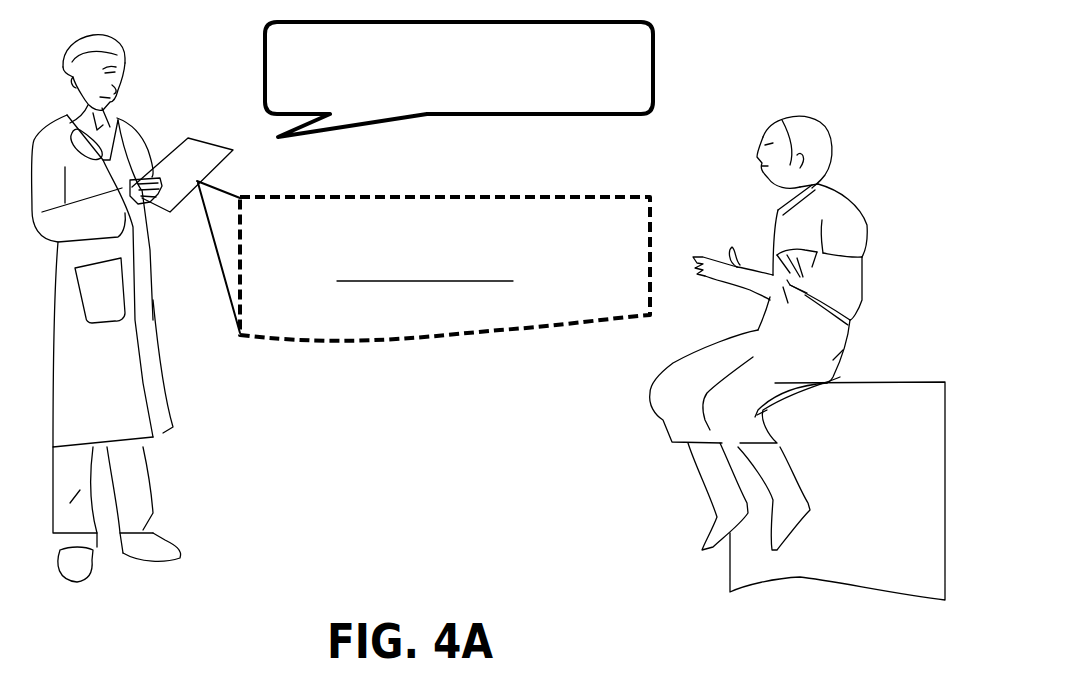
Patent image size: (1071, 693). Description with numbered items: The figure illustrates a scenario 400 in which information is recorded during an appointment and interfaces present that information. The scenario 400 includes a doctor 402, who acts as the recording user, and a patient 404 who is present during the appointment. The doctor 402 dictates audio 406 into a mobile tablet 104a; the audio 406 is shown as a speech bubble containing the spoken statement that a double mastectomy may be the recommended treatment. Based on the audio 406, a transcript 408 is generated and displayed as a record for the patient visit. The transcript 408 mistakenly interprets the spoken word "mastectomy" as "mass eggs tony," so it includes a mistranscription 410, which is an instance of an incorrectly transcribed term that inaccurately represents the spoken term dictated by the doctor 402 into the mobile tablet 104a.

The scenario 400 is at (712, 76).
The doctor 402 is at (153, 566).
The patient 404 is at (710, 554).
The audio 406 is at (628, 117).
The transcript 408 is at (630, 233).
The mistranscription 410 is at (470, 280).
The mobile tablet 104a is at (192, 138).